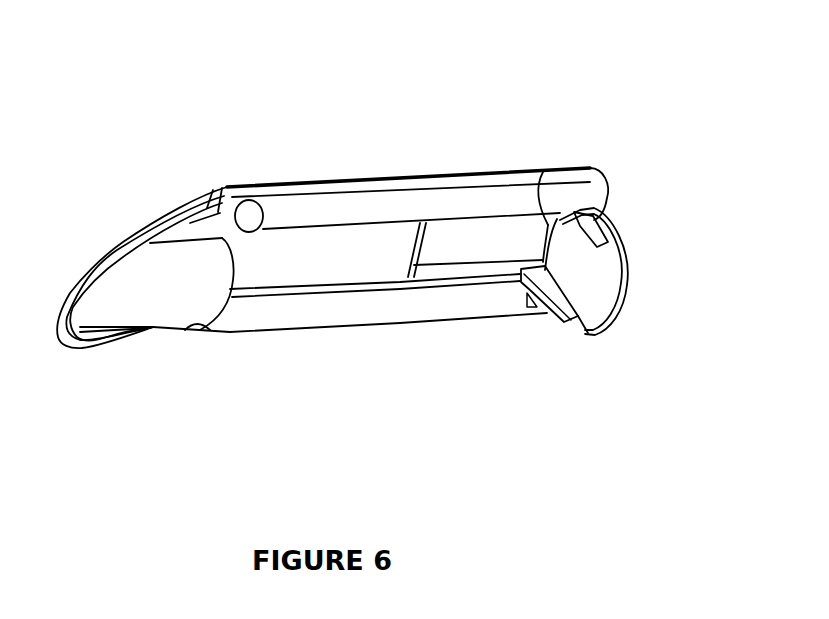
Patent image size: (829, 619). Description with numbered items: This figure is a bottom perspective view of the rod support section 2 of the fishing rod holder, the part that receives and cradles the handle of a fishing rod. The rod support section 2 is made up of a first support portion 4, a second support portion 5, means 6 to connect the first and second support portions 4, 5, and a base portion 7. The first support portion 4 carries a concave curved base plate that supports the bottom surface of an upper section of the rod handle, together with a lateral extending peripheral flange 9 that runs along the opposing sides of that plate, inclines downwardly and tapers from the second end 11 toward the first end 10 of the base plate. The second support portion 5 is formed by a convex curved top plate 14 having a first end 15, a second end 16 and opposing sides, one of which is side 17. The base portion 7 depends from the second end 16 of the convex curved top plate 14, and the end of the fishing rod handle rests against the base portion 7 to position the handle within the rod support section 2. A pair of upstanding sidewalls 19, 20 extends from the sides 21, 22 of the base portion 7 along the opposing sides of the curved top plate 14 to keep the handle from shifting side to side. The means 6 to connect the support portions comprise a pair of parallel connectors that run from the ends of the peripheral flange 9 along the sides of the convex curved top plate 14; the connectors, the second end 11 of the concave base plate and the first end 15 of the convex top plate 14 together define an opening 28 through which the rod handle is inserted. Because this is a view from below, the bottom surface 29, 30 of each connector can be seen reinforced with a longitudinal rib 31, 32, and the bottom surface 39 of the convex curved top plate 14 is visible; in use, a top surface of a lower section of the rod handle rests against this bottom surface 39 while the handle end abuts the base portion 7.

The rod support section 2 is at (356, 140).
The first support portion 4 is at (140, 203).
The second support portion 5 is at (618, 178).
The means to connect said first and second support portions 6 is at (404, 166).
The base portion 7 is at (607, 302).
The lateral extending peripheral flange 9 is at (80, 345).
The first end 10 is at (163, 313).
The second end 11 is at (230, 306).
The convex curved top plate 14 is at (467, 235).
The first end 15 is at (412, 238).
The second end 16 is at (545, 172).
The side 17 is at (460, 277).
The upstanding sidewall 19 is at (550, 330).
The upstanding sidewall 20 is at (598, 240).
The side 21 is at (565, 333).
The side 22 is at (617, 253).
The opening 28 is at (298, 267).
The bottom surface 29 is at (400, 318).
The bottom surface 30 is at (282, 186).
The longitudinal rib 31 is at (497, 307).
The longitudinal rib 32 is at (354, 202).
The bottom surface 39 is at (488, 235).